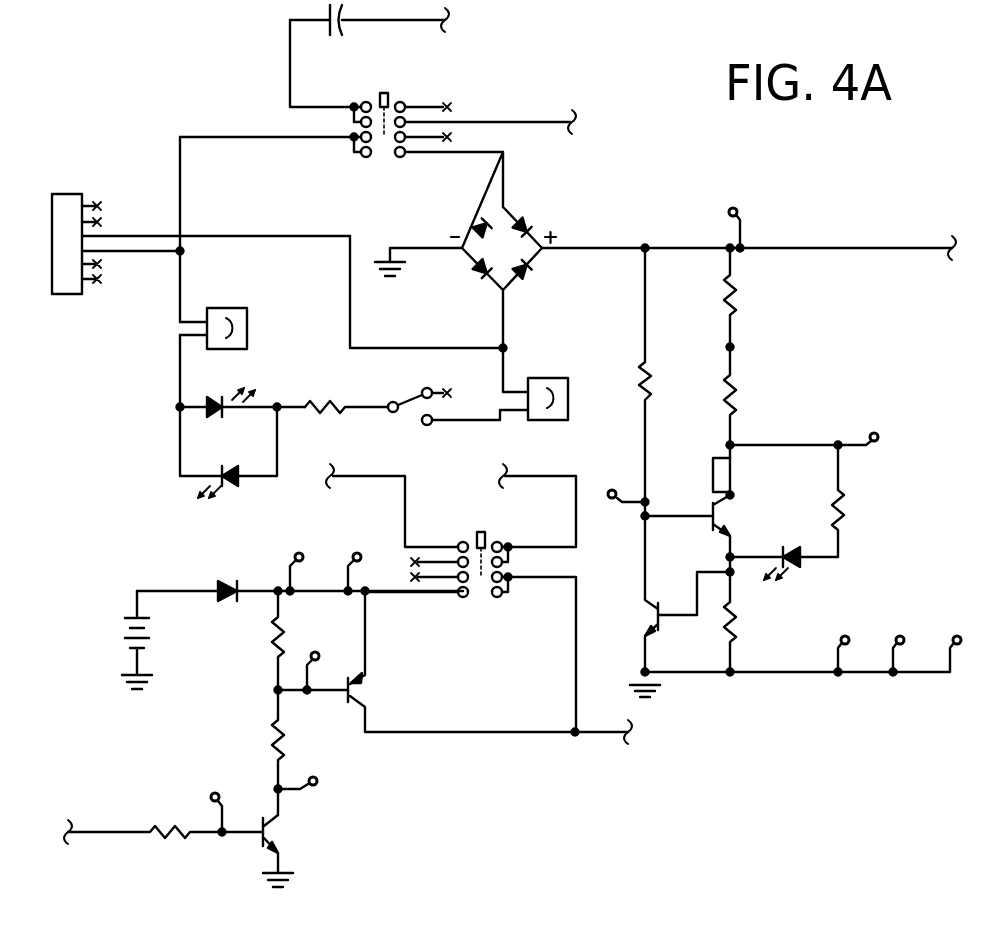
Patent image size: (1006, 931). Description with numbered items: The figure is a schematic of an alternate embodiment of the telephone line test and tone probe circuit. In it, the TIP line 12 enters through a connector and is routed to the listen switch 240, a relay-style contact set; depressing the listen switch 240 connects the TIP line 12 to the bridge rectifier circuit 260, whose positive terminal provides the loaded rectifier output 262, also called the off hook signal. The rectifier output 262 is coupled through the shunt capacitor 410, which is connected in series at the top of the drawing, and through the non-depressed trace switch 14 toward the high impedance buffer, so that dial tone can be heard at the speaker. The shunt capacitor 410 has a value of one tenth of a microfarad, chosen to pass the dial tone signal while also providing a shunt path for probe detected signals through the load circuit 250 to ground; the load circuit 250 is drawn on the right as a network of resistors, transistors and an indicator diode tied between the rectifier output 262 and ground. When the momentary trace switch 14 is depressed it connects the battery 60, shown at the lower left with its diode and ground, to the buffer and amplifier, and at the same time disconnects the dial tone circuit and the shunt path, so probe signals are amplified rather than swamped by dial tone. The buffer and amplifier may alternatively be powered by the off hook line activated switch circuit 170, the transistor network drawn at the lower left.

The TIP line 12 is at (179, 177).
The shunt capacitor 410 is at (346, 29).
The listen switch 240 is at (386, 93).
The bridge rectifier circuit 260 is at (512, 212).
The loaded rectifier output 262 is at (588, 246).
The load circuit 250 is at (979, 397).
The trace switch 14 is at (480, 532).
The battery 60 is at (133, 639).
The off hook line activated switch circuit 170 is at (500, 820).